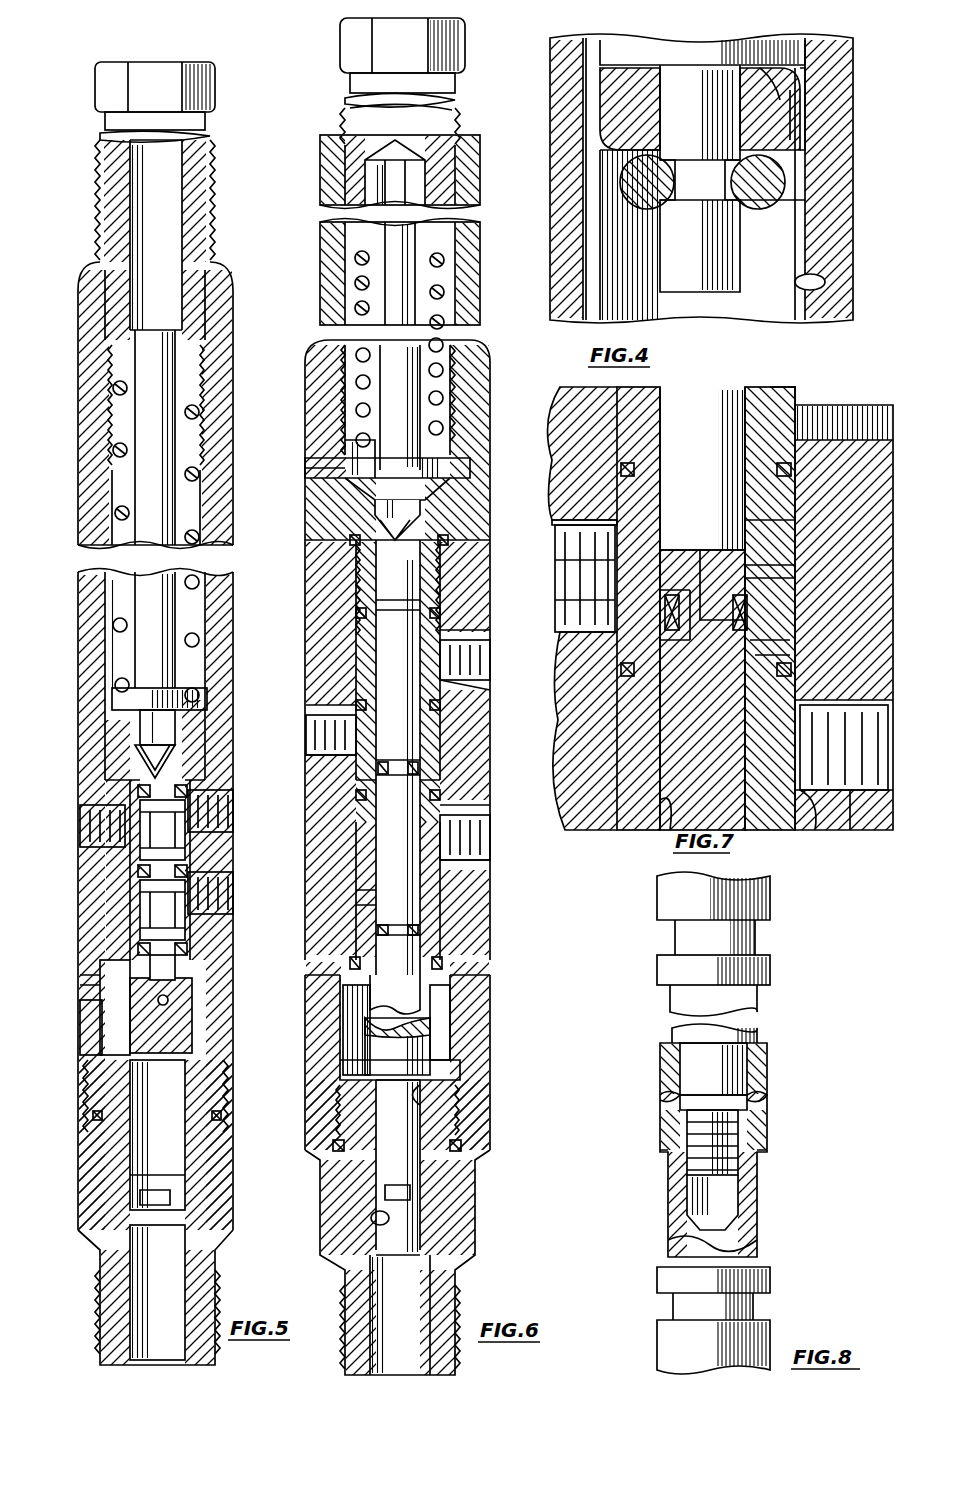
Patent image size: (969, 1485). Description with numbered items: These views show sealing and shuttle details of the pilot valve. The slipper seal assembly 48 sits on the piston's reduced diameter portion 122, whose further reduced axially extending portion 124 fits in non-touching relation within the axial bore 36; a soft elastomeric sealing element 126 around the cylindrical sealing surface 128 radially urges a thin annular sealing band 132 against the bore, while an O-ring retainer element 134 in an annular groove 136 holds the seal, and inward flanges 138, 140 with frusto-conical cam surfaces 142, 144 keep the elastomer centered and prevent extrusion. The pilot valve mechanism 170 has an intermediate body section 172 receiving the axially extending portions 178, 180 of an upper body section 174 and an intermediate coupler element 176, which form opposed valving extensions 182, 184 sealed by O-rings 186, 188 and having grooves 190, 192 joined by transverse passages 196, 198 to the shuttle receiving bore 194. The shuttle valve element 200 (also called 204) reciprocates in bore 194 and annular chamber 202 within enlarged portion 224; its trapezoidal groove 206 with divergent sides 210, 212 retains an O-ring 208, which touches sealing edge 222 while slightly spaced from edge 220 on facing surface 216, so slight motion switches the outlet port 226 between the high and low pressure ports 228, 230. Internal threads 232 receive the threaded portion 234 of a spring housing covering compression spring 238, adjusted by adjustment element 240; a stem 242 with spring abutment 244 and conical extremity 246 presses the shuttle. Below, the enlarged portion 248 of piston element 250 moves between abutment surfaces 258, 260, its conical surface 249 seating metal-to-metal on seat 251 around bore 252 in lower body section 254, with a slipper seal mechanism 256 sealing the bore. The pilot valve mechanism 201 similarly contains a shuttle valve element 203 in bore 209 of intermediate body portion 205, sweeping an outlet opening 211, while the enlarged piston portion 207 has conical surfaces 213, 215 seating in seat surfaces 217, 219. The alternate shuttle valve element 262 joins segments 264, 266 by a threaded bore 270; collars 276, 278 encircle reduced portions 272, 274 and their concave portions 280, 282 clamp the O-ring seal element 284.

In FIG. 4, the axial bore 36 is at (825, 282).
In FIG. 4, the seal assembly 48 is at (617, 158).
In FIG. 4, the reduced diameter portion 122 is at (742, 50).
In FIG. 4, the reduced diameter axially extending portion 124 is at (740, 250).
In FIG. 4, the soft elastomeric sealing element 126 is at (610, 110).
In FIG. 4, the cylindrical sealing surface 128 is at (655, 268).
In FIG. 4, the annular sealing band 132 is at (580, 75).
In FIG. 4, the annular retainer element 134 is at (775, 195).
In FIG. 4, the annular groove 136 is at (630, 192).
In FIG. 4, the annular inwardly extending flange 138 is at (800, 78).
In FIG. 4, the annular inwardly extending flange 140 is at (795, 150).
In FIG. 4, the frusto-conical surface 142 is at (810, 110).
In FIG. 4, the frusto-conical surface 144 is at (805, 125).
In FIG. 6, the pilot valve mechanism 170 is at (300, 358).
In FIG. 6, the intermediate body section 172 is at (302, 830).
In FIG. 7, the intermediate body section 172 is at (612, 436).
In FIG. 6, the upper body section 174 is at (315, 405).
In FIG. 6, the intermediate coupler element 176 is at (320, 1105).
In FIG. 6, the axially extending portion 178 is at (345, 588).
In FIG. 6, the axially extending portion 180 is at (345, 900).
In FIG. 6, the valving extension 182 is at (432, 722).
In FIG. 7, the valving extension 182 is at (772, 526).
In FIG. 6, the valving extension 184 is at (435, 775).
In FIG. 7, the valving extension 184 is at (775, 610).
In FIG. 7, the annular sealing element 186 is at (630, 478).
In FIG. 7, the annular sealing element 188 is at (604, 690).
In FIG. 7, the annular groove 190 is at (800, 398).
In FIG. 7, the annular groove 192 is at (810, 835).
In FIG. 6, the shuttle valve element receiving bore 194 is at (455, 905).
In FIG. 7, the shuttle valve element receiving bore 194 is at (660, 828).
In FIG. 7, the transverse passage 196 is at (775, 395).
In FIG. 7, the transverse passage 198 is at (800, 742).
In FIG. 6, the shuttle valve element 200 is at (442, 810).
In FIG. 7, the shuttle valve element 200 is at (665, 385).
In FIG. 5, the pilot valve mechanism 201 is at (222, 190).
In FIG. 7, the annular chamber 202 is at (800, 562).
In FIG. 5, the shuttle valve element 203 is at (150, 843).
In FIG. 7, the shuttle valve element 204 is at (722, 565).
In FIG. 5, the intermediate body portion 205 is at (232, 655).
In FIG. 6, the annular groove 206 is at (400, 760).
In FIG. 7, the annular groove 206 is at (715, 635).
In FIG. 5, the enlarged piston portion 207 is at (190, 1040).
In FIG. 7, the annular sealing element 208 is at (790, 630).
In FIG. 5, the bore 209 is at (195, 748).
In FIG. 7, the groove side 210 is at (680, 555).
In FIG. 5, the outlet opening 211 is at (84, 848).
In FIG. 7, the groove side 212 is at (670, 660).
In FIG. 5, the conical sealing surface 213 is at (170, 978).
In FIG. 5, the conical sealing surface 215 is at (170, 1070).
In FIG. 7, the annular facing surface 216 is at (640, 572).
In FIG. 5, the seat surface 217 is at (97, 990).
In FIG. 5, the seat surface 219 is at (98, 1040).
In FIG. 7, the sealing edge 220 is at (620, 600).
In FIG. 7, the sealing edge 222 is at (795, 578).
In FIG. 7, the enlarged annular portion 224 is at (556, 520).
In FIG. 6, the outlet port 226 is at (320, 760).
In FIG. 7, the outlet port 226 is at (592, 592).
In FIG. 6, the high pressure port 228 is at (480, 672).
In FIG. 7, the high pressure port 228 is at (840, 432).
In FIG. 6, the low pressure port 230 is at (470, 860).
In FIG. 7, the low pressure port 230 is at (850, 795).
In FIG. 6, the internal threads 232 is at (470, 382).
In FIG. 6, the externally threaded portion 234 is at (472, 350).
In FIG. 6, the compression spring 238 is at (352, 300).
In FIG. 6, the adjustment element 240 is at (458, 106).
In FIG. 6, the stem 242 is at (405, 237).
In FIG. 6, the spring abutment element 244 is at (435, 470).
In FIG. 6, the conical extremity 246 is at (400, 522).
In FIG. 6, the enlarged portion 248 is at (410, 1050).
In FIG. 6, the conical surface 249 is at (420, 1100).
In FIG. 6, the piston element 250 is at (340, 1045).
In FIG. 6, the conical seat surface 251 is at (422, 1118).
In FIG. 6, the bore 252 is at (372, 1222).
In FIG. 6, the lower body section 254 is at (350, 1180).
In FIG. 6, the slipper seal mechanism 256 is at (420, 1200).
In FIG. 6, the abutment surface 258 is at (445, 1062).
In FIG. 6, the abutment surface 260 is at (440, 1005).
In FIG. 8, the shuttle valve element 262 is at (777, 899).
In FIG. 8, the segment 264 is at (685, 995).
In FIG. 8, the segment 266 is at (680, 1210).
In FIG. 8, the externally threaded bore 270 is at (740, 1170).
In FIG. 8, the reduced diameter portion 272 is at (740, 1065).
In FIG. 8, the reduced diameter portion 274 is at (745, 1132).
In FIG. 8, the seal element support collar 276 is at (665, 1072).
In FIG. 8, the seal element support collar 278 is at (660, 1147).
In FIG. 8, the concave curved outer portion 280 is at (663, 1095).
In FIG. 8, the concave curved outer portion 282 is at (662, 1113).
In FIG. 8, the annular seal element 284 is at (766, 1100).